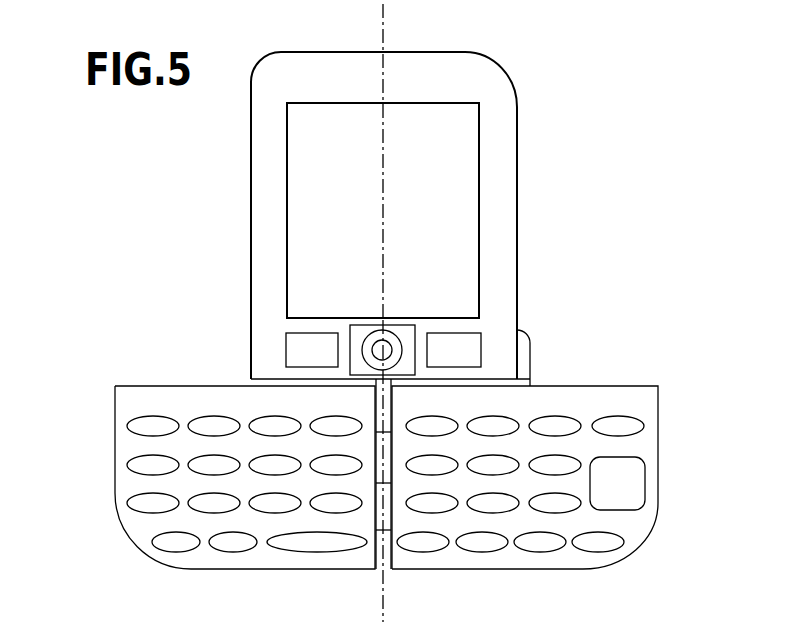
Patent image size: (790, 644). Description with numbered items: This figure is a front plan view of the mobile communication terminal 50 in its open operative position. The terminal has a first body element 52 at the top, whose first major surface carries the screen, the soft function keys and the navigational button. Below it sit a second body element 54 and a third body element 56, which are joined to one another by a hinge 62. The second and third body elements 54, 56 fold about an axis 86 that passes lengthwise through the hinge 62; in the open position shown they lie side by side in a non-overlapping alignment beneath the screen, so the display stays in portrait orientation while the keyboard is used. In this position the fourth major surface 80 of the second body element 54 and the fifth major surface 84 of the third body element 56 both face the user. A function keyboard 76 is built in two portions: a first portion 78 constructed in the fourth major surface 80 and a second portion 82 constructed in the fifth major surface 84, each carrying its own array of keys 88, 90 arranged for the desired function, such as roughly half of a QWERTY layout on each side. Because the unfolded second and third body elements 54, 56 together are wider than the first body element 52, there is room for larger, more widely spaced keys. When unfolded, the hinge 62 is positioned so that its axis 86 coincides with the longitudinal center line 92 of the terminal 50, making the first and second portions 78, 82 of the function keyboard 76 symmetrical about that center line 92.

The mobile communication terminal 50 is at (438, 199).
The first body element 52 is at (498, 72).
The second body element 54 is at (546, 473).
The third body element 56 is at (216, 498).
The hinge 62 is at (391, 570).
The function keyboard 76 is at (552, 364).
The first portion of function keyboard 78 is at (562, 422).
The fourth major surface 80 is at (572, 562).
The second portion of function keyboard 82 is at (150, 517).
The fifth major surface 84 is at (204, 559).
The axis 86 is at (383, 600).
The keys 88 is at (483, 549).
The keys 90 is at (240, 522).
The longitudinal center line 92 is at (382, 26).